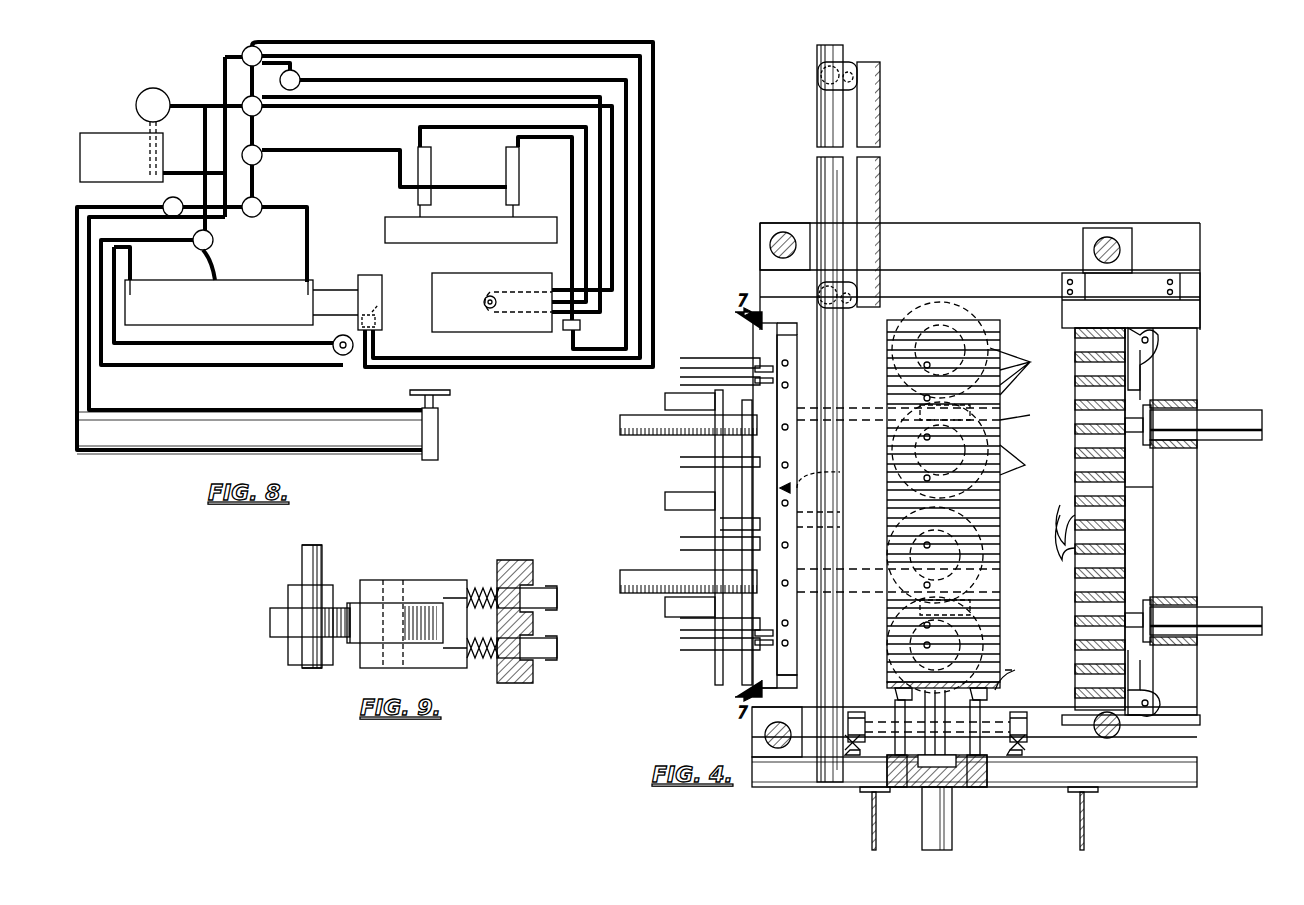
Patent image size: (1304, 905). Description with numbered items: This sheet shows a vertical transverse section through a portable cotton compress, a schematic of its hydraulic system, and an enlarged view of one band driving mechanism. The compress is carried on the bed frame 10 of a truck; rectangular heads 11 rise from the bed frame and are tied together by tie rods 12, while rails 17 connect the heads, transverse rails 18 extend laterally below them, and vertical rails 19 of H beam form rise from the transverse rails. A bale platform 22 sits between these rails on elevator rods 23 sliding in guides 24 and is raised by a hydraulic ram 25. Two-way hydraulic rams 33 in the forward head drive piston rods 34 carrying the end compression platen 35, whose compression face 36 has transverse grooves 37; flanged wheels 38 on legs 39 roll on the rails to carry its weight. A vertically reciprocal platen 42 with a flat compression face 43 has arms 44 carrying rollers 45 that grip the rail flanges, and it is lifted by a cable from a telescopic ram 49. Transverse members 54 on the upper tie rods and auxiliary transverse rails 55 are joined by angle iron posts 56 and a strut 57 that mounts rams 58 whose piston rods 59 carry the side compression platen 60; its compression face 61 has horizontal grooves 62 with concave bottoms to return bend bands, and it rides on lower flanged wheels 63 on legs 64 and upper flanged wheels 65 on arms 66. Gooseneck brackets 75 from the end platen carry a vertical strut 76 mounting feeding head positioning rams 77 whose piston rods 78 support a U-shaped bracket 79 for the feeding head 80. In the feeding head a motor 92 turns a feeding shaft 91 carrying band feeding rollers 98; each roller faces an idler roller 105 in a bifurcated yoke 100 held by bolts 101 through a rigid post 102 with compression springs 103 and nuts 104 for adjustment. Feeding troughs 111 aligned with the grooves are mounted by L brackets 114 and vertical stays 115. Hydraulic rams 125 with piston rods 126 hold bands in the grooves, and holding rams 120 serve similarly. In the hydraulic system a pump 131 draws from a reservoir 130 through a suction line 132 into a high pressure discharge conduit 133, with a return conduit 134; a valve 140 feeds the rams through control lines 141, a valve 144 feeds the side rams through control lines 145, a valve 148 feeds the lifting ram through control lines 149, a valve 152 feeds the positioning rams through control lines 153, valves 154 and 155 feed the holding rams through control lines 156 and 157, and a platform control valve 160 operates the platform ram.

In FIG. 4, the bed frame 10 is at (872, 822).
In FIG. 4, the head 11 is at (935, 240).
In FIG. 4, the tie rod 12 is at (783, 232).
In FIG. 4, the rail 17 is at (850, 755).
In FIG. 4, the transverse rail 18 is at (790, 775).
In FIG. 4, the vertical rail 19 is at (826, 116).
In FIG. 8, the bale platform 22 is at (470, 325).
In FIG. 4, the bale platform 22 is at (1017, 674).
In FIG. 4, the elevator rod 23 is at (925, 740).
In FIG. 4, the guide 24 is at (885, 770).
In FIG. 8, the hydraulic ram 25 is at (484, 300).
In FIG. 4, the hydraulic ram 25 is at (952, 830).
In FIG. 8, the two-way hydraulic ram 33 is at (265, 292).
In FIG. 8, the piston rod 34 is at (333, 298).
In FIG. 4, the piston rod 34 is at (975, 325).
In FIG. 8, the end compression platen 35 is at (372, 283).
In FIG. 4, the end compression platen 35 is at (1024, 415).
In FIG. 4, the compression face 36 is at (1020, 462).
In FIG. 4, the transverse groove 37 is at (1020, 371).
In FIG. 4, the flanged wheel 38 is at (858, 712).
In FIG. 4, the leg 39 is at (895, 692).
In FIG. 4, the vertically reciprocal platen 42 is at (882, 110).
In FIG. 4, the compression face 43 is at (882, 190).
In FIG. 4, the arm 44 is at (818, 72).
In FIG. 4, the roller 45 is at (843, 80).
In FIG. 8, the ram 49 is at (347, 356).
In FIG. 4, the transverse member 54 is at (982, 282).
In FIG. 4, the auxiliary transverse rail 55 is at (1103, 322).
In FIG. 4, the angle iron post 56 is at (1200, 520).
In FIG. 4, the strut 57 is at (1188, 402).
In FIG. 8, the ram 58 is at (512, 157).
In FIG. 4, the ram 58 is at (1235, 420).
In FIG. 4, the piston rod 59 is at (1145, 445).
In FIG. 8, the side compression platen 60 is at (472, 232).
In FIG. 4, the side compression platen 60 is at (1155, 488).
In FIG. 4, the compression face 61 is at (1075, 445).
In FIG. 4, the horizontal groove 62 is at (1075, 508).
In FIG. 4, the lower flanged wheel 63 is at (1158, 695).
In FIG. 4, the leg 64 is at (1130, 665).
In FIG. 4, the upper flanged wheel 65 is at (1160, 342).
In FIG. 4, the arm 66 is at (1135, 375).
In FIG. 4, the gooseneck bracket 75 is at (665, 400).
In FIG. 8, the vertical strut 76 is at (442, 395).
In FIG. 4, the vertical strut 76 is at (715, 480).
In FIG. 8, the feeding head positioning ram 77 is at (440, 430).
In FIG. 4, the feeding head positioning ram 77 is at (645, 438).
In FIG. 4, the piston rod 78 is at (746, 468).
In FIG. 4, the U-shaped bracket 79 is at (753, 333).
In FIG. 4, the feeding head 80 is at (800, 487).
In FIG. 9, the feeding shaft 91 is at (306, 565).
In FIG. 4, the reversible electric motor 92 is at (800, 348).
In FIG. 9, the band feeding roller 98 is at (293, 615).
In FIG. 9, the bifurcated yoke 100 is at (432, 580).
In FIG. 9, the bolt 101 is at (487, 658).
In FIG. 9, the rigid post 102 is at (512, 560).
In FIG. 4, the rigid post 102 is at (800, 528).
In FIG. 9, the compression spring 103 is at (462, 648).
In FIG. 9, the nut 104 is at (557, 648).
In FIG. 9, the idler roller 105 is at (362, 612).
In FIG. 4, the feeding trough 111 is at (680, 375).
In FIG. 4, the L bracket 114 is at (758, 365).
In FIG. 4, the vertical stay 115 is at (725, 523).
In FIG. 8, the holding ram 120 is at (567, 333).
In FIG. 8, the hydraulic ram 125 is at (380, 305).
In FIG. 4, the piston rod 126 is at (925, 555).
In FIG. 8, the reservoir 130 is at (100, 145).
In FIG. 8, the driven pump 131 is at (150, 90).
In FIG. 8, the suction line 132 is at (148, 128).
In FIG. 8, the high pressure discharge conduit 133 is at (178, 104).
In FIG. 8, the return conduit 134 is at (176, 170).
In FIG. 8, the valve 140 is at (262, 200).
In FIG. 8, the control line 141 is at (307, 246).
In FIG. 8, the valve 144 is at (262, 160).
In FIG. 8, the control line 145 is at (378, 145).
In FIG. 8, the valve 148 is at (212, 255).
In FIG. 8, the control line 149 is at (230, 362).
In FIG. 8, the valve 152 is at (163, 203).
In FIG. 8, the control line 153 is at (255, 452).
In FIG. 8, the valve 154 is at (300, 78).
In FIG. 8, the valve 155 is at (242, 50).
In FIG. 8, the control line 156 is at (438, 85).
In FIG. 8, the control line 157 is at (657, 118).
In FIG. 8, the platform control valve 160 is at (240, 110).